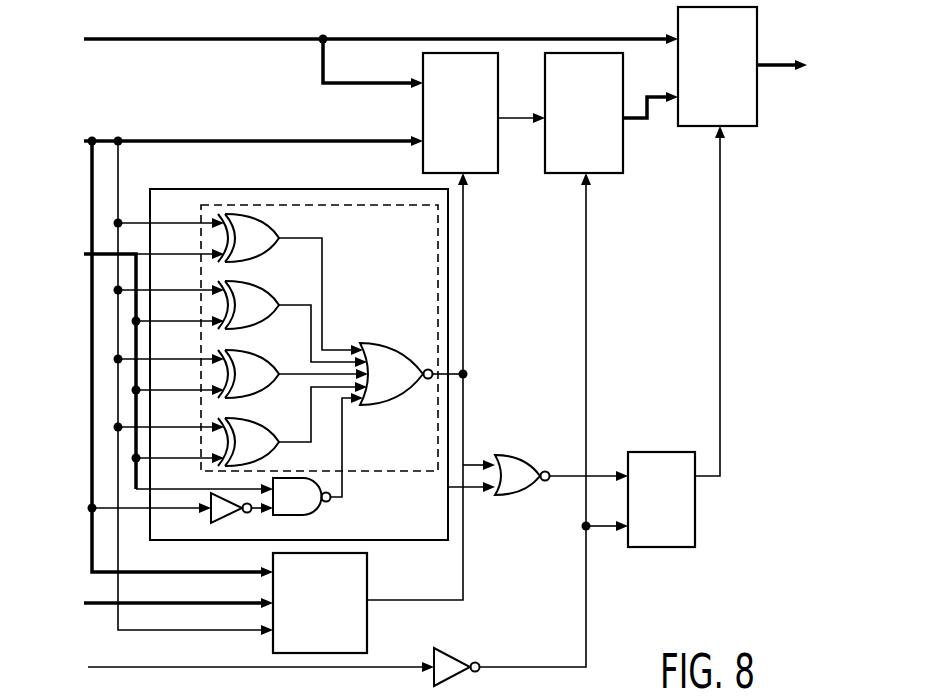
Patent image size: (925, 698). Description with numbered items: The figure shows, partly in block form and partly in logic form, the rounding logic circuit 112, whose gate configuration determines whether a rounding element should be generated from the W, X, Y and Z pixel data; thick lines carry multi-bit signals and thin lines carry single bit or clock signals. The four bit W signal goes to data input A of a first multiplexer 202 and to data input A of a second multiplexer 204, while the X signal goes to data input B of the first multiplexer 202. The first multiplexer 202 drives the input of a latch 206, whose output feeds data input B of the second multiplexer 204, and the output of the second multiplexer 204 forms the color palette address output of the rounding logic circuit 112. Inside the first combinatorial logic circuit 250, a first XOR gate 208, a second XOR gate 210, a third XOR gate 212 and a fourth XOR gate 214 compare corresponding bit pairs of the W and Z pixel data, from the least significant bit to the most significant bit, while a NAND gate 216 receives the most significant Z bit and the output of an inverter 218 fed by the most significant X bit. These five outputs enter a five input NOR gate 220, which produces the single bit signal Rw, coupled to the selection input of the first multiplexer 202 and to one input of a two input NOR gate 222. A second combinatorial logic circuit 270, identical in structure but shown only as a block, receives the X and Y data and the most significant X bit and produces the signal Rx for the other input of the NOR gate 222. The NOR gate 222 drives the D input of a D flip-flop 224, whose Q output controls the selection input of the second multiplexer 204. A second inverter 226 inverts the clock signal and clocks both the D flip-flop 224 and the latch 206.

The rounding logic circuit 112 is at (786, 583).
The first multiplexer 202 is at (488, 174).
The second multiplexer 204 is at (697, 128).
The latch 206 is at (605, 174).
The first exclusive-OR gate 208 is at (278, 226).
The second exclusive-OR gate 210 is at (268, 286).
The third exclusive-OR gate 212 is at (268, 355).
The fourth exclusive-OR gate 214 is at (262, 424).
The NAND gate 216 is at (330, 507).
The inverter 218 is at (226, 522).
The five input NOR gate 220 is at (397, 352).
The two input NOR gate 222 is at (517, 455).
The D flip-flop 224 is at (651, 452).
The second inverter 226 is at (460, 652).
The first combinatorial logic circuit 250 is at (395, 541).
The second combinatorial logic circuit 270 is at (368, 630).